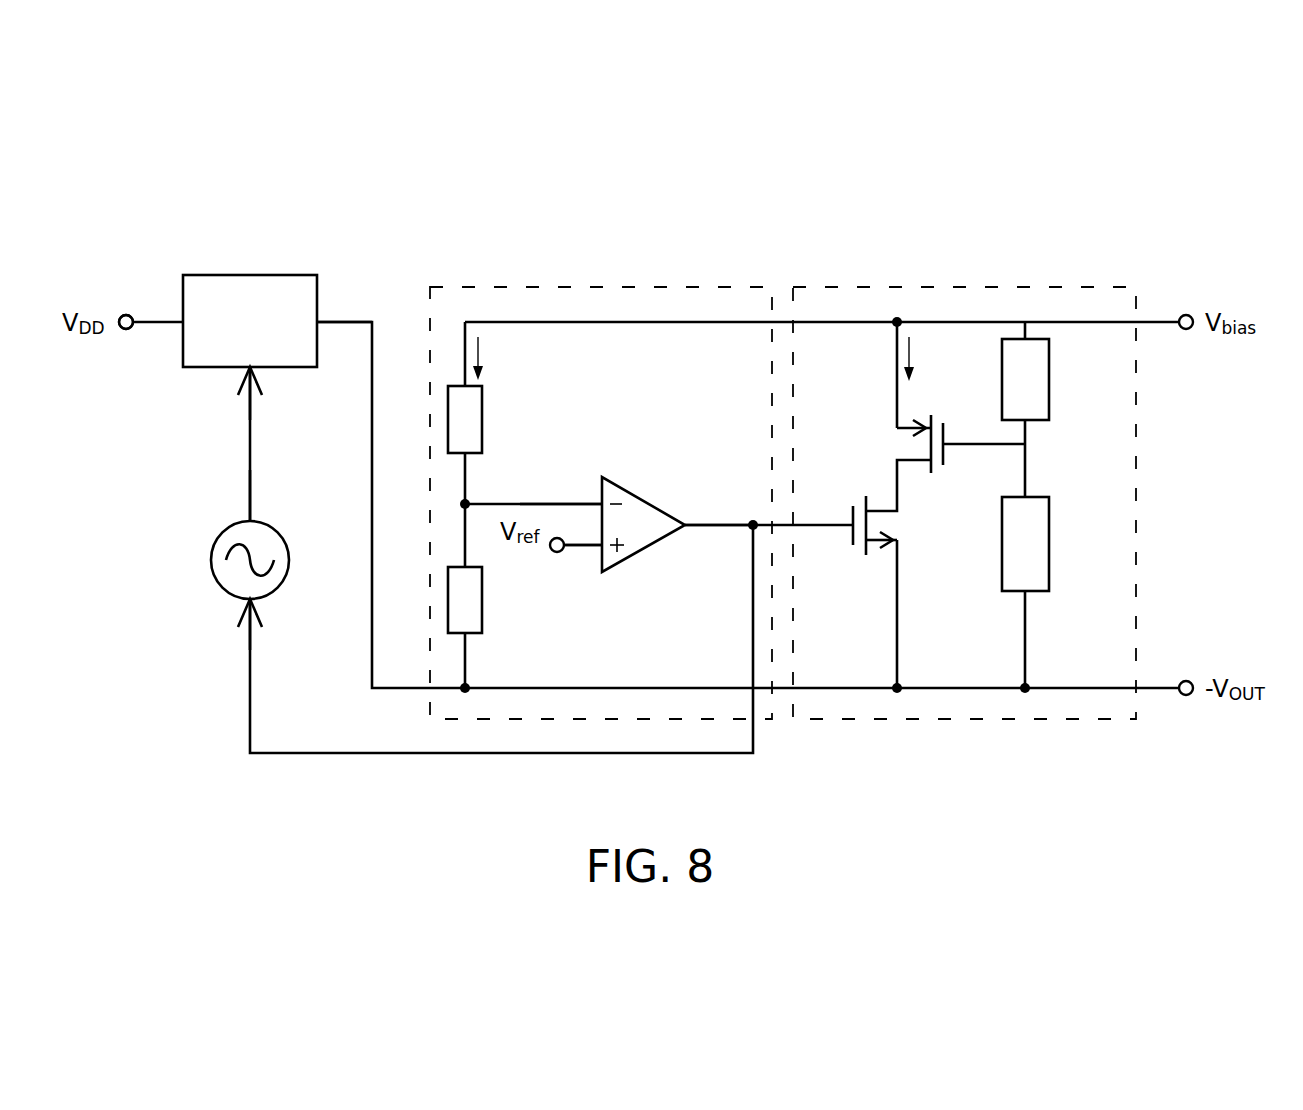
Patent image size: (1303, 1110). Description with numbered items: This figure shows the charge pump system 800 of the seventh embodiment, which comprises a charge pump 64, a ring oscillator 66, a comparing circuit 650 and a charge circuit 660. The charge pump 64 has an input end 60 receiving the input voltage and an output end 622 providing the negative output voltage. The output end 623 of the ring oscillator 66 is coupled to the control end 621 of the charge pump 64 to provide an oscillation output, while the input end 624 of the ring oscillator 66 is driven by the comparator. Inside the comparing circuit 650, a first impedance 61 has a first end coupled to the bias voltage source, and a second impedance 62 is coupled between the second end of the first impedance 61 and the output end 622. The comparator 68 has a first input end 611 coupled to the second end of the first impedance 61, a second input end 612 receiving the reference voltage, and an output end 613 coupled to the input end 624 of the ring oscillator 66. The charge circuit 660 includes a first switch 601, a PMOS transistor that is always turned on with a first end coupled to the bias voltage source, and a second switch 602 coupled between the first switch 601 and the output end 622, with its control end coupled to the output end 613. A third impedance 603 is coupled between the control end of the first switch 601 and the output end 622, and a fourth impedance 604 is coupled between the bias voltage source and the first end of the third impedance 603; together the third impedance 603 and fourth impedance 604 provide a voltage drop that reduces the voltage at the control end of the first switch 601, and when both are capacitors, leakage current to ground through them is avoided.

The charge pump system 800 is at (1098, 155).
The input end 60 is at (126, 314).
The charge pump 64 is at (248, 275).
The output end 622 is at (318, 312).
The control end 621 is at (247, 378).
The output end 623 is at (248, 517).
The input end 624 is at (247, 608).
The ring oscillator 66 is at (210, 560).
The comparing circuit 650 is at (598, 286).
The charge circuit 660 is at (962, 286).
The first impedance 61 is at (483, 418).
The second impedance 62 is at (483, 598).
The comparator 68 is at (645, 498).
The first input end 611 is at (610, 486).
The second input end 612 is at (609, 564).
The output end 613 is at (687, 528).
The first switch 601 is at (944, 420).
The second switch 602 is at (858, 500).
The third impedance 603 is at (1050, 542).
The fourth impedance 604 is at (1050, 382).